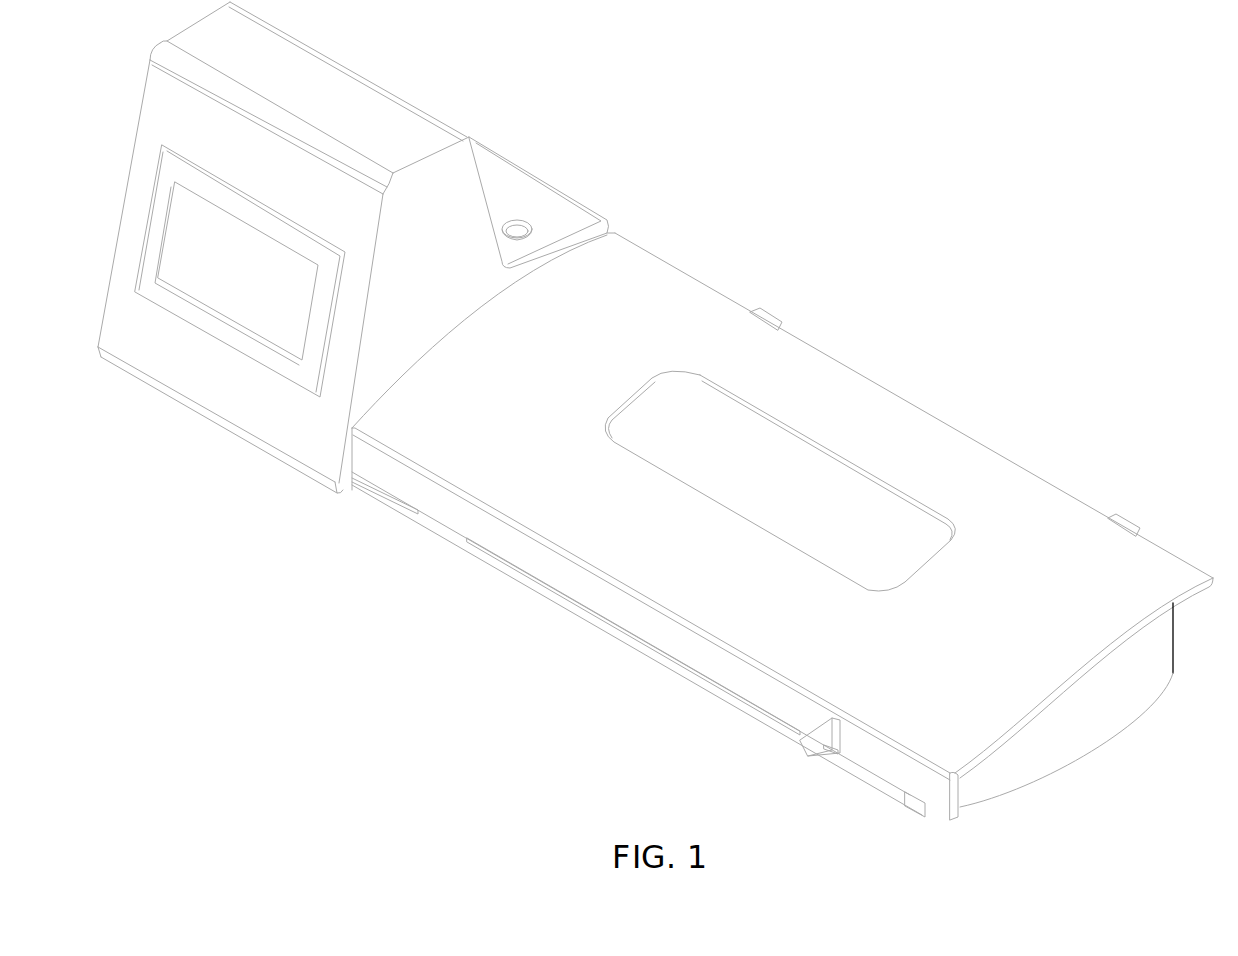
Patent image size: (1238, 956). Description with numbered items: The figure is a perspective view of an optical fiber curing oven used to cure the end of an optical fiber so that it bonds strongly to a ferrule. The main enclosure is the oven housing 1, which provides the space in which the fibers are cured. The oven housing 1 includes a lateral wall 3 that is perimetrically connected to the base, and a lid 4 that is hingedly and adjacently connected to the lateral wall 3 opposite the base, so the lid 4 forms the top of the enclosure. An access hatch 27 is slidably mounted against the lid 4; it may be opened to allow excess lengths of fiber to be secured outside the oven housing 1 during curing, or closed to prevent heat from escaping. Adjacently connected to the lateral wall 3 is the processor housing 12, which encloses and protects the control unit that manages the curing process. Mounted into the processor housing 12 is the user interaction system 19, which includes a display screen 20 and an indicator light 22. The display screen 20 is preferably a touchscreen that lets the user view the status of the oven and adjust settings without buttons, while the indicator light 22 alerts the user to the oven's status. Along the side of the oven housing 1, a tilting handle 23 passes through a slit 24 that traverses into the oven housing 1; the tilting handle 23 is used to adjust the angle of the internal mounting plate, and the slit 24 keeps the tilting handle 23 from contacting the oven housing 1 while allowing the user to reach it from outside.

The oven housing 1 is at (691, 274).
The lateral wall 3 is at (1133, 703).
The lid 4 is at (962, 443).
The processor housing 12 is at (372, 80).
The user interaction system 19 is at (148, 202).
The display screen 20 is at (233, 337).
The indicator light 22 is at (513, 222).
The tilting handle 23 is at (802, 750).
The slit 24 is at (834, 752).
The access hatch 27 is at (945, 540).